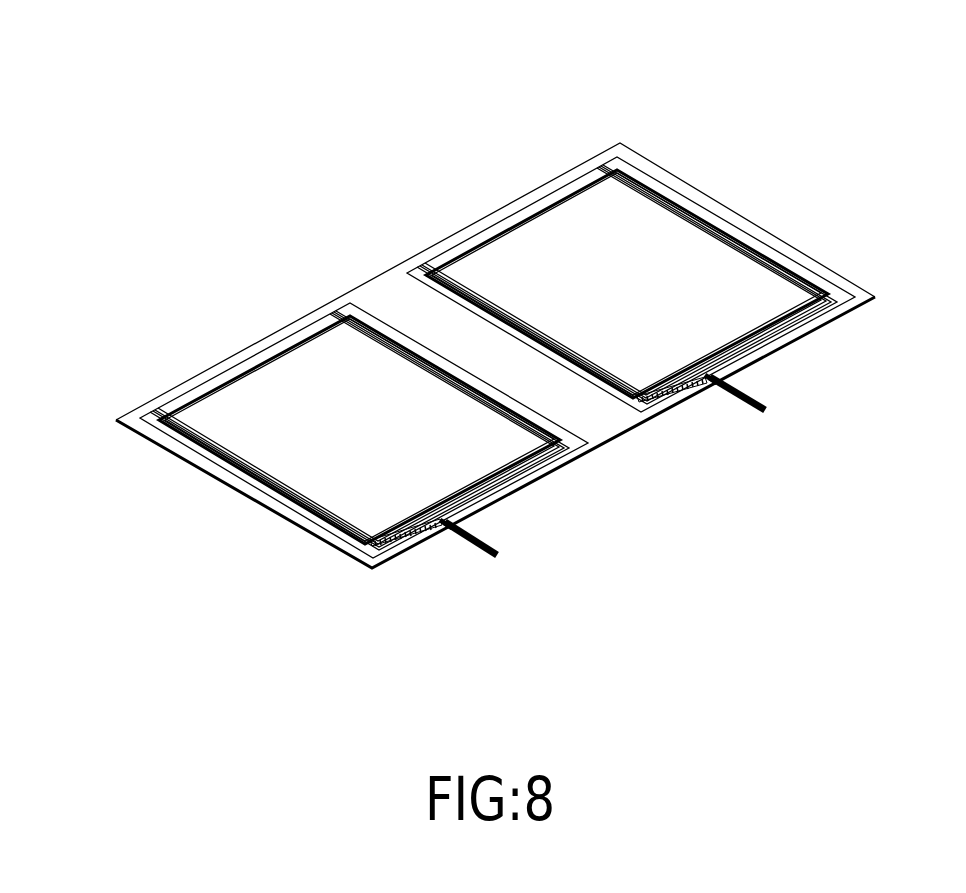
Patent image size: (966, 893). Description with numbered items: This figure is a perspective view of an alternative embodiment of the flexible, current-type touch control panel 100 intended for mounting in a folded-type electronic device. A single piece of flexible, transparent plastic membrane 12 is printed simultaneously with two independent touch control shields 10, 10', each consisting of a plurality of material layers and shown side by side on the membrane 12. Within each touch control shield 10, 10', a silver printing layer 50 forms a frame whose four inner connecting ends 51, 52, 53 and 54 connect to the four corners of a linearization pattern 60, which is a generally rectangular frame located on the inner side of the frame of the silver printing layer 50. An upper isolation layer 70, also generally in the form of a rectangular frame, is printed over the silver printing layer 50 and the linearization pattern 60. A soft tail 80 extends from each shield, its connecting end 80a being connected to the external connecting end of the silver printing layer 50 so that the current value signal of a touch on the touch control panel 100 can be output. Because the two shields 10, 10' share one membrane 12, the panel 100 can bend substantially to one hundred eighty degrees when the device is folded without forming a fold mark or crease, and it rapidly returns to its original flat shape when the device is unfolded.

The touch control panel 100 is at (913, 650).
The transparent plastic membrane 12 is at (397, 302).
The touch control shield 10 is at (338, 500).
The touch control shield 10' is at (631, 206).
The upper isolation layer 70 is at (170, 403).
The linearization pattern 60 is at (237, 377).
The inner connecting end 54 is at (348, 316).
The inner connecting end 51 is at (152, 426).
The silver printing layer 50 is at (252, 479).
The inner connecting end 53 is at (563, 442).
The inner connecting end 52 is at (362, 555).
The soft tail 80 is at (472, 553).
The connecting end 80a is at (448, 527).